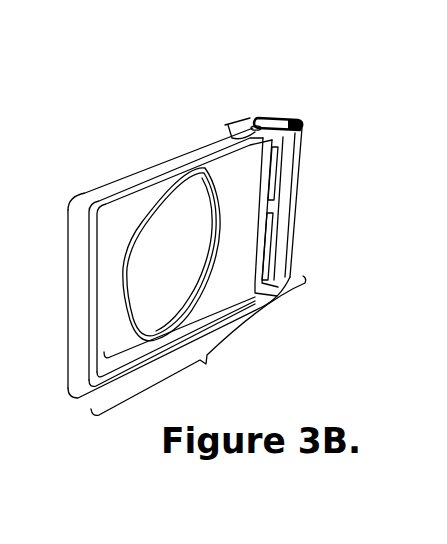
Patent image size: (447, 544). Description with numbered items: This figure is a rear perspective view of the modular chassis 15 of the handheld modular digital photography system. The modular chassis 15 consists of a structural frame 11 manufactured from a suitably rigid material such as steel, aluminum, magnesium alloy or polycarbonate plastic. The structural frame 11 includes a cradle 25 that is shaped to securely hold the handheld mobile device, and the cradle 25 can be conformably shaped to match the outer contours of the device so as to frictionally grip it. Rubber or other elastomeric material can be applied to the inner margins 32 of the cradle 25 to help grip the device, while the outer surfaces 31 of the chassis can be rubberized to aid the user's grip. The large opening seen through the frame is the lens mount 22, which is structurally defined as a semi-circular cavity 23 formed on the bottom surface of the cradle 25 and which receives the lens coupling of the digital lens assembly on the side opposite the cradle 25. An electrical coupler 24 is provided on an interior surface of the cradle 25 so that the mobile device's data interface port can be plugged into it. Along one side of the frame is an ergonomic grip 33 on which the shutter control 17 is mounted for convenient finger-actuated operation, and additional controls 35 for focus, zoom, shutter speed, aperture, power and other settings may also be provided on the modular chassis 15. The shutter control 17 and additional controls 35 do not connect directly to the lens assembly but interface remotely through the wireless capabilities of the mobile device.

The structural frame 11 is at (198, 345).
The modular chassis 15 is at (82, 179).
The shutter control 17 is at (295, 118).
The lens mount 22 is at (169, 328).
The semi-circular cavity 23 is at (152, 227).
The electrical coupler 24 is at (278, 177).
The cradle 25 is at (107, 310).
The outer surfaces 31 is at (70, 201).
The inner margins 32 is at (88, 390).
The ergonomic grip 33 is at (226, 121).
The additional controls 35 is at (257, 118).